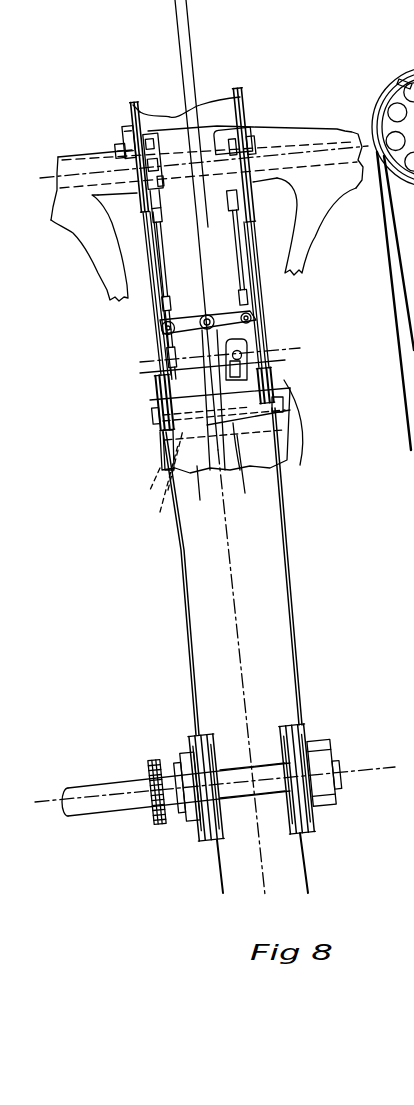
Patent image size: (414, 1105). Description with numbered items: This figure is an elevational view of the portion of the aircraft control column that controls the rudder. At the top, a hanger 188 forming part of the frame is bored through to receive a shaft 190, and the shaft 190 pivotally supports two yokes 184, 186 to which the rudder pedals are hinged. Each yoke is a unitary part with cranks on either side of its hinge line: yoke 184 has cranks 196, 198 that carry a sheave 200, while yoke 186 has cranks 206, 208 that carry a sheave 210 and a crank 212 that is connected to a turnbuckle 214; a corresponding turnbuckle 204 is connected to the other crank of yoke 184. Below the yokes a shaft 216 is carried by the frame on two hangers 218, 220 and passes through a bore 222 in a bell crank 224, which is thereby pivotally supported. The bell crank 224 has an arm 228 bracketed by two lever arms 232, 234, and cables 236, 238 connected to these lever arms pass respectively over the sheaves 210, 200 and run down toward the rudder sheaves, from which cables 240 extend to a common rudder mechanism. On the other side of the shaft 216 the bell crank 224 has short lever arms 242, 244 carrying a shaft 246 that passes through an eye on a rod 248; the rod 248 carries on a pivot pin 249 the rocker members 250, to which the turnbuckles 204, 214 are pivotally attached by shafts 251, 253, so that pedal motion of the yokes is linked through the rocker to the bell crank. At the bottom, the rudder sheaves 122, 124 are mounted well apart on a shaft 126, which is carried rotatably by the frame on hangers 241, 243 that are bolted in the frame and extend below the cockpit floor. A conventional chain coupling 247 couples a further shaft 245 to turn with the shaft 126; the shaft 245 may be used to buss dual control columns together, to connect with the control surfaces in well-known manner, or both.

The rudder sheave 122 is at (310, 815).
The rudder sheave 124 is at (200, 833).
The shaft 126 is at (233, 747).
The yoke 184 is at (298, 248).
The yoke 186 is at (112, 280).
The hanger 188 is at (173, 143).
The shaft 190 is at (306, 128).
The crank 196 is at (257, 125).
The crank 198 is at (200, 100).
The sheave 200 is at (249, 93).
The turnbuckle 204 is at (242, 273).
The crank 206 is at (130, 125).
The crank 208 is at (126, 142).
The sheave 210 is at (133, 105).
The crank 212 is at (170, 190).
The turnbuckle 214 is at (165, 259).
The shaft 216 is at (280, 432).
The hanger 218 is at (162, 445).
The hanger 220 is at (277, 395).
The bore 222 is at (160, 468).
The bell crank 224 is at (272, 445).
The arm 228 is at (240, 380).
The lever arm 232 is at (152, 414).
The lever arm 234 is at (283, 403).
The cable 236 is at (158, 333).
The cable 238 is at (270, 330).
The cables 240 is at (300, 863).
The hanger 241 is at (173, 755).
The short lever arm 242 is at (204, 429).
The hanger 243 is at (330, 752).
The short lever arm 244 is at (252, 477).
The shaft 245 is at (110, 813).
The shaft 246 is at (155, 482).
The chain coupling 247 is at (150, 763).
The rod 248 is at (200, 370).
The pivot pin 249 is at (228, 302).
The rocker members 250 is at (183, 320).
The shaft 251 is at (257, 316).
The shaft 253 is at (160, 330).